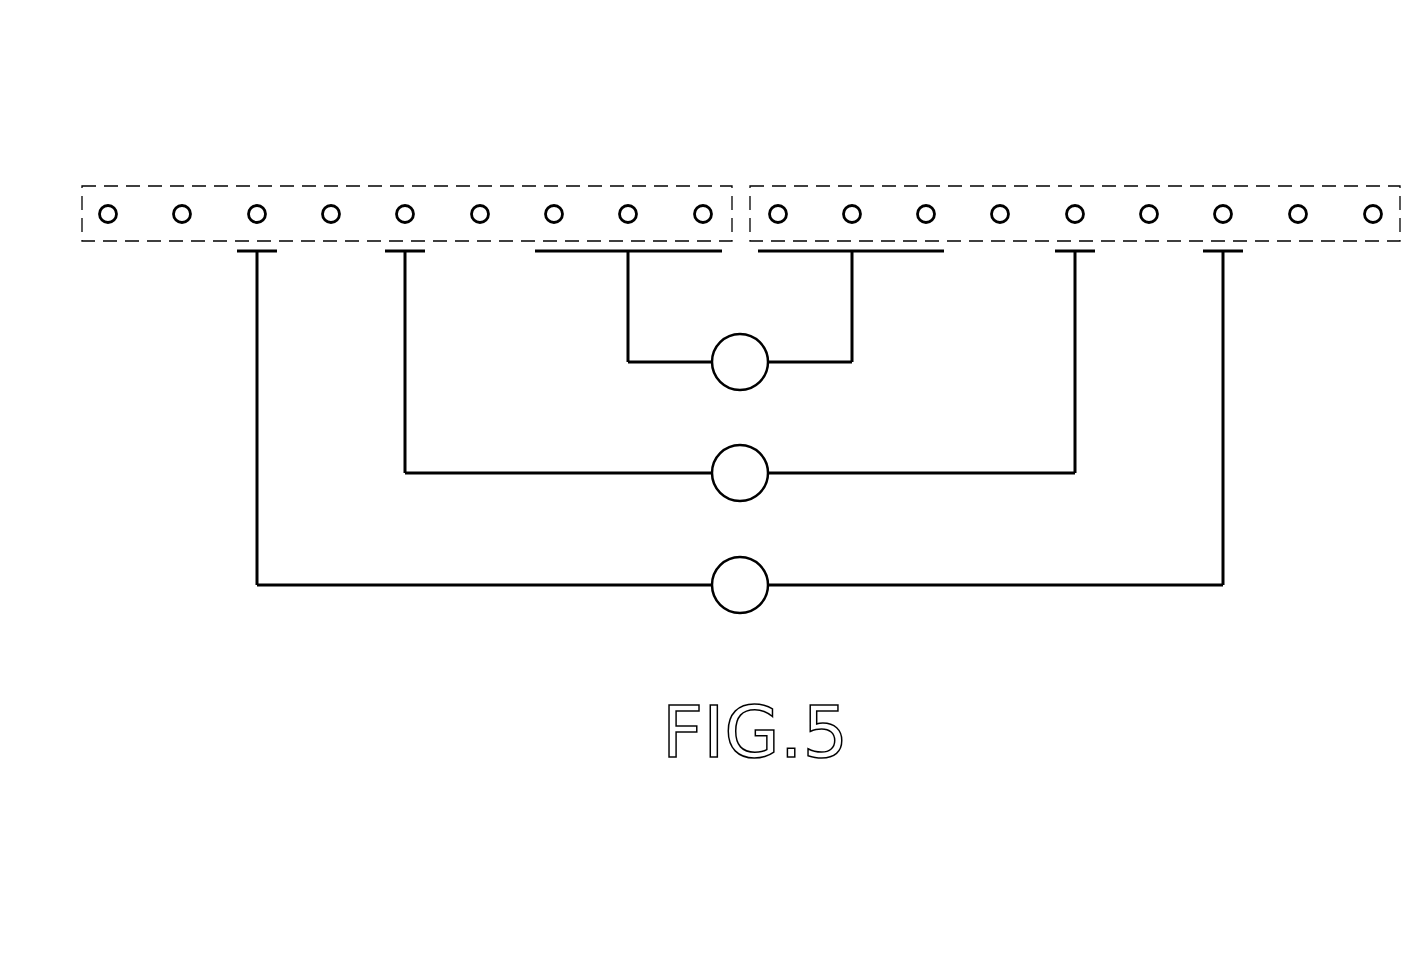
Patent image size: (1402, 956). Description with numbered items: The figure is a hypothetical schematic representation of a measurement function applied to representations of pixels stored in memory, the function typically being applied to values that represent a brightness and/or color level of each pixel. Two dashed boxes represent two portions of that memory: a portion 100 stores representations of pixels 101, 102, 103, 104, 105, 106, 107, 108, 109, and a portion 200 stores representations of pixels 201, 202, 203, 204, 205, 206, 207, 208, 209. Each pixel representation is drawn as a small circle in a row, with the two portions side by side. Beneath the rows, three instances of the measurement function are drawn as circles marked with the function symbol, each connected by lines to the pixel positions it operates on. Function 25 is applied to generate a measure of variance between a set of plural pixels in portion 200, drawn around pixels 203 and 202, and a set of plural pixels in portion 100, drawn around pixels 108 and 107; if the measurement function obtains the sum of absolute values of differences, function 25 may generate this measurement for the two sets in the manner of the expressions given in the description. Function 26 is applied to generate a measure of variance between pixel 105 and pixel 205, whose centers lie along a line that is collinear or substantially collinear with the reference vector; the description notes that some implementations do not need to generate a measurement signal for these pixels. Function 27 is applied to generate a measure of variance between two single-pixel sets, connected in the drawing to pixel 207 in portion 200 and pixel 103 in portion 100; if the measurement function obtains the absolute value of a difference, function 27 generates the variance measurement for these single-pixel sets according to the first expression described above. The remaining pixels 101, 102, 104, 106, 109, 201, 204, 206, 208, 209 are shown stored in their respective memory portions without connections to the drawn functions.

The portion of memory 100 is at (1126, 186).
The portion of memory 200 is at (458, 186).
The pixel 101 is at (1373, 205).
The pixel 102 is at (1298, 205).
The pixel 103 is at (1223, 205).
The pixel 104 is at (1149, 205).
The pixel 105 is at (1075, 205).
The pixel 106 is at (1000, 205).
The pixel 107 is at (926, 205).
The pixel 108 is at (852, 205).
The pixel 109 is at (778, 205).
The pixel 201 is at (703, 205).
The pixel 202 is at (628, 205).
The pixel 203 is at (554, 205).
The pixel 204 is at (480, 205).
The pixel 205 is at (405, 205).
The pixel 206 is at (331, 205).
The pixel 207 is at (257, 205).
The pixel 208 is at (182, 205).
The pixel 209 is at (108, 205).
The function 25 is at (740, 333).
The function 26 is at (740, 444).
The function 27 is at (740, 556).